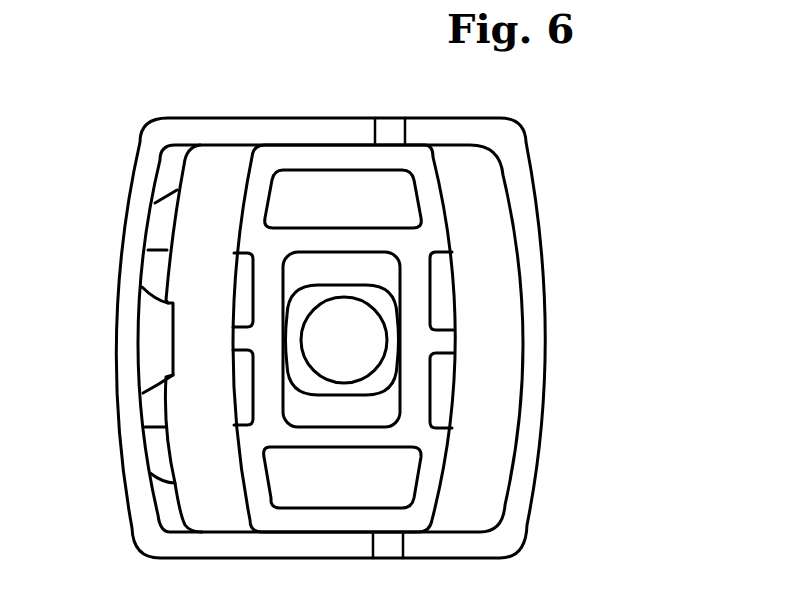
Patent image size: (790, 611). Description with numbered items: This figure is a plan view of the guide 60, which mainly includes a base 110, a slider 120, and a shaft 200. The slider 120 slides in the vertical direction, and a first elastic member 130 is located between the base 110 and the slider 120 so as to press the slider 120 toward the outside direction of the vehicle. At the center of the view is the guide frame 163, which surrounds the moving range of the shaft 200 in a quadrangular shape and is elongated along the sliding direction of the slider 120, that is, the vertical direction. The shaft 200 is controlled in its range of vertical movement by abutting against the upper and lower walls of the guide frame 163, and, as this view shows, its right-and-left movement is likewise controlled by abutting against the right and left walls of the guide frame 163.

The guide 60 is at (150, 96).
The base 110 is at (498, 225).
The slider 120 is at (123, 333).
The first elastic member 130 is at (158, 222).
The guide frame 163 is at (422, 343).
The shaft 200 is at (358, 323).